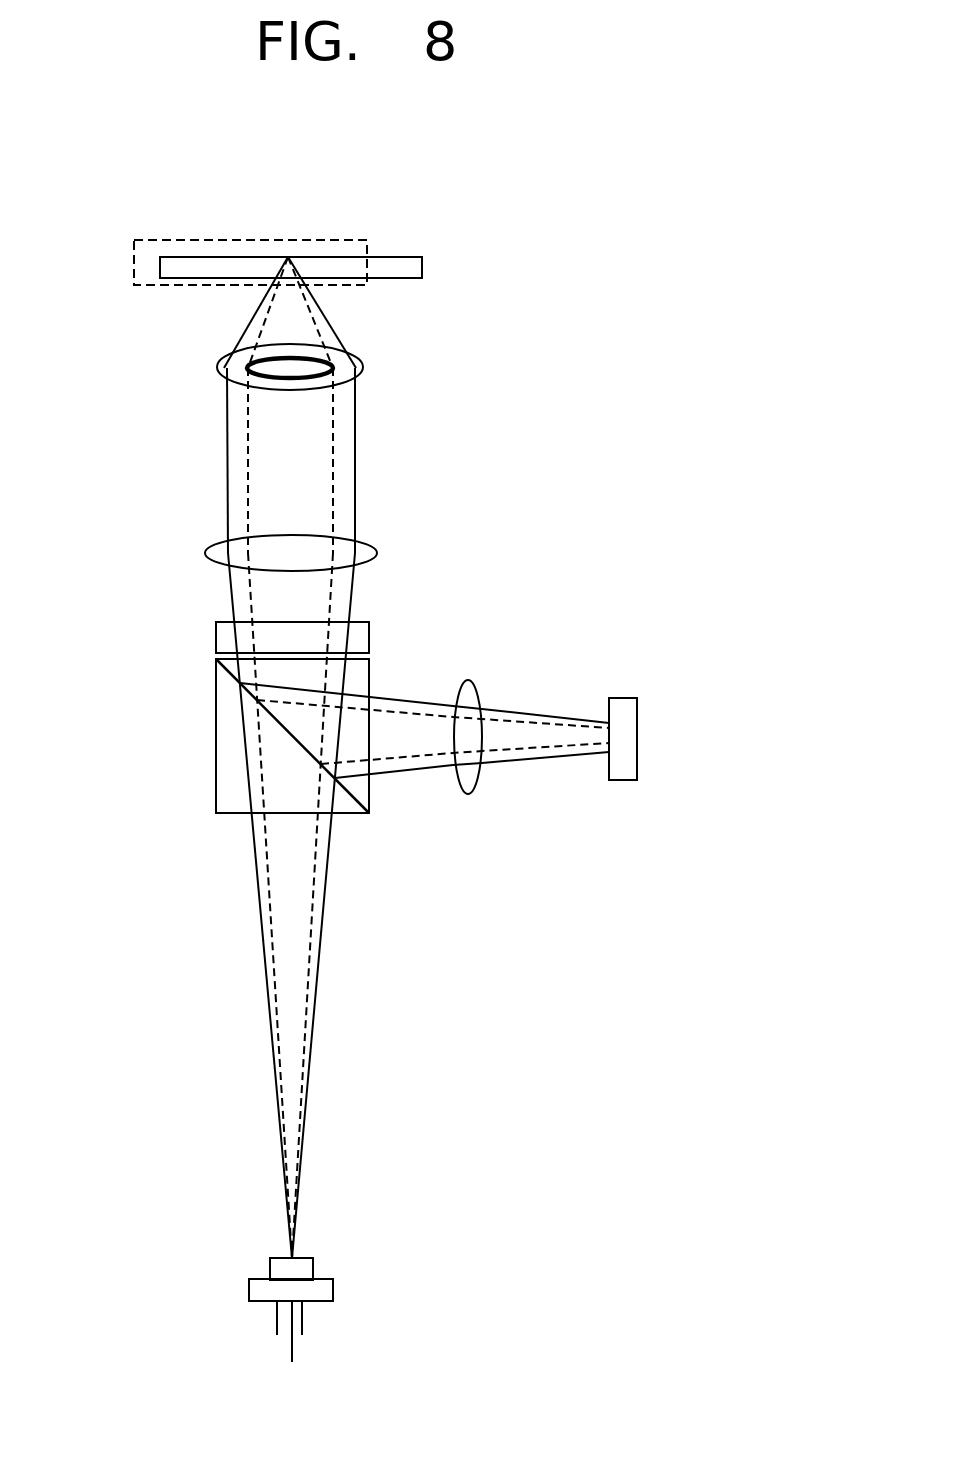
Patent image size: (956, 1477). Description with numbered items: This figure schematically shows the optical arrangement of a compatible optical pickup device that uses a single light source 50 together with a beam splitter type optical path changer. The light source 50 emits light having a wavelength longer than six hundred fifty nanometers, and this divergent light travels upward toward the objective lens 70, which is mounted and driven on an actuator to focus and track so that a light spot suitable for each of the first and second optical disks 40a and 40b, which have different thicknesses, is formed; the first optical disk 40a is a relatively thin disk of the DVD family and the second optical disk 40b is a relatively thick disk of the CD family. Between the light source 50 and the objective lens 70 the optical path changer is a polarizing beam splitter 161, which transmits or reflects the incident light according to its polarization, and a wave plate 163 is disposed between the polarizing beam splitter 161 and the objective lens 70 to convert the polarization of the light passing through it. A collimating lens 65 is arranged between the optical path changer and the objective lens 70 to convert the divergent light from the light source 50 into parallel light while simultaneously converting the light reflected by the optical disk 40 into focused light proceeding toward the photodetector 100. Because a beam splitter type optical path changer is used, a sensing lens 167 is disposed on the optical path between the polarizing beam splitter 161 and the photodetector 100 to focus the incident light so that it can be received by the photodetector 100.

The optical disk 40 is at (255, 256).
The first optical disk 40a is at (397, 273).
The second optical disk 40b is at (338, 240).
The objective lens 70 is at (190, 396).
The collimating lens 65 is at (377, 553).
The wave plate 163 is at (216, 635).
The polarizing beam splitter 161 is at (218, 700).
The sensing lens 167 is at (475, 692).
The photodetector 100 is at (623, 705).
The light source 50 is at (273, 1267).